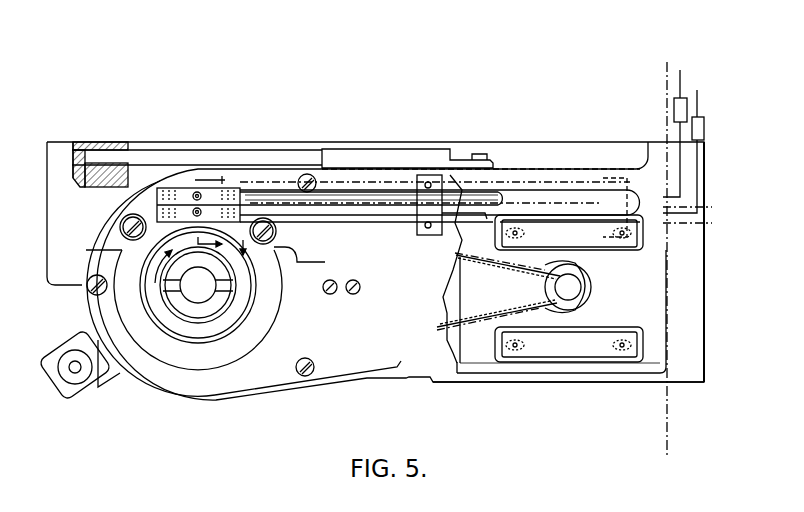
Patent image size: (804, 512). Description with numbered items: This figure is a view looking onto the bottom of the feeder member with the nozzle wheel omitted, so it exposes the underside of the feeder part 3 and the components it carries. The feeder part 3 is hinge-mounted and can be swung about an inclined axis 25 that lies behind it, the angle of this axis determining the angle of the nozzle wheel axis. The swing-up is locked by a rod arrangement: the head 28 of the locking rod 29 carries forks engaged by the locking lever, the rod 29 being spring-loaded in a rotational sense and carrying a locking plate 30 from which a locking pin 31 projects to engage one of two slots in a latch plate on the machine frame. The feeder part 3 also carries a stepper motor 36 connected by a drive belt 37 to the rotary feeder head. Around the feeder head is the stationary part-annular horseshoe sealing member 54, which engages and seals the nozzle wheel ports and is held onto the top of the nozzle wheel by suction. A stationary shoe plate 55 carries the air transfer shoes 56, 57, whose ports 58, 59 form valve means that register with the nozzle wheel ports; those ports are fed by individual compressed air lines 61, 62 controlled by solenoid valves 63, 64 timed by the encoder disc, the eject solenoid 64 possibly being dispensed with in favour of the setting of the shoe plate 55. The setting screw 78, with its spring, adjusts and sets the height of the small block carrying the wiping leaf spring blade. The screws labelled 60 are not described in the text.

The feeder part 3 is at (312, 143).
The axis 25 is at (667, 402).
The head 28 is at (77, 150).
The locking rod 29 is at (291, 162).
The locking plate 30 is at (422, 156).
The locking pin 31 is at (482, 153).
The stepper motor 36 is at (627, 298).
The drive belt 37 is at (478, 320).
The sealing member 54 is at (212, 362).
The shoe plate 55 is at (150, 197).
The air transfer shoe 56 is at (241, 194).
The air transfer shoe 57 is at (244, 212).
The port 58 is at (195, 193).
The port 59 is at (194, 209).
The fastening screws 60 is at (122, 230).
The compressed air line 61 is at (398, 213).
The compressed air line 62 is at (370, 197).
The solenoid valve 63 is at (694, 133).
The eject solenoid 64 is at (676, 110).
The setting screw 78 is at (81, 398).